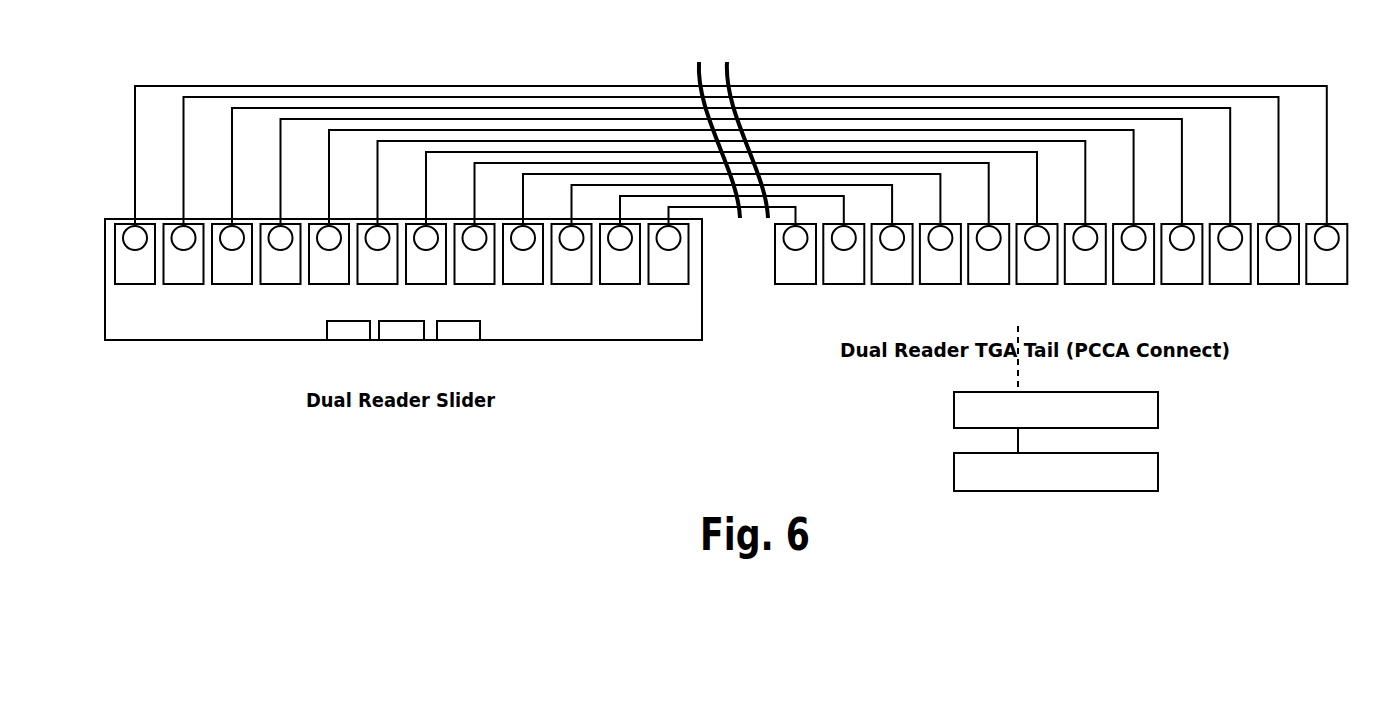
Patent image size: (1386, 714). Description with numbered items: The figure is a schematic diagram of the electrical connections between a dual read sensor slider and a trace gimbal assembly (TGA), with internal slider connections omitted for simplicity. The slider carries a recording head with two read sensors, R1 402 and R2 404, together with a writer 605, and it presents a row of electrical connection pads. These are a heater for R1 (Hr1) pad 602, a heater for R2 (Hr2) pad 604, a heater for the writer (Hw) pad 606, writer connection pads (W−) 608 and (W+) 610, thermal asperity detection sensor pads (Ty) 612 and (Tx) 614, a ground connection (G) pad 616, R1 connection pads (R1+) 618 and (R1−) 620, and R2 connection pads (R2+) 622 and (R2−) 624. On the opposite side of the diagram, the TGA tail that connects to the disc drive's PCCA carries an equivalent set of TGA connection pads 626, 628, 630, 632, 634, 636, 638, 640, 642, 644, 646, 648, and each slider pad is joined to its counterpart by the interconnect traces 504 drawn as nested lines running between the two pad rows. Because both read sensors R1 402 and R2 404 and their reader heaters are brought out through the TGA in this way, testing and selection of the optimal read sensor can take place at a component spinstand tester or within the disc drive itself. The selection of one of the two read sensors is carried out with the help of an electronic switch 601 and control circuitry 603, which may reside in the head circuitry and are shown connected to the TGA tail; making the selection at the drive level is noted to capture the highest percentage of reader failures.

The interconnect traces 504 is at (570, 108).
The read sensor R1 402 is at (366, 337).
The read sensor R2 404 is at (475, 337).
The writer 605 is at (422, 337).
The electronic switch 601 is at (1158, 411).
The control circuitry 603 is at (1158, 474).
The heater for R1 (Hr1) pad 602 is at (136, 284).
The heater for R2 (Hr2) pad 604 is at (184, 284).
The heater for the writer (Hw) pad 606 is at (233, 284).
The writer connection pad (W-) 608 is at (282, 284).
The writer connection pad (W+) 610 is at (330, 284).
The thermal asperity detection sensor pad (Ty) 612 is at (378, 284).
The thermal asperity detection sensor pad (Tx) 614 is at (429, 284).
The ground connection (G) pad 616 is at (476, 284).
The R1 connection pad (R1+) 618 is at (525, 284).
The R1 connection pad (R1-) 620 is at (577, 284).
The R2 connection pad (R2+) 622 is at (618, 284).
The R2 connection pad (R2-) 624 is at (670, 284).
The TGA connection pad 626 is at (800, 284).
The TGA connection pad 628 is at (848, 284).
The TGA connection pad 630 is at (896, 284).
The TGA connection pad 632 is at (944, 284).
The TGA connection pad 634 is at (993, 284).
The TGA connection pad 636 is at (1041, 284).
The TGA connection pad 638 is at (1091, 284).
The TGA connection pad 640 is at (1142, 284).
The TGA connection pad 642 is at (1185, 284).
The TGA connection pad 644 is at (1235, 284).
The TGA connection pad 646 is at (1285, 284).
The TGA connection pad 648 is at (1328, 284).